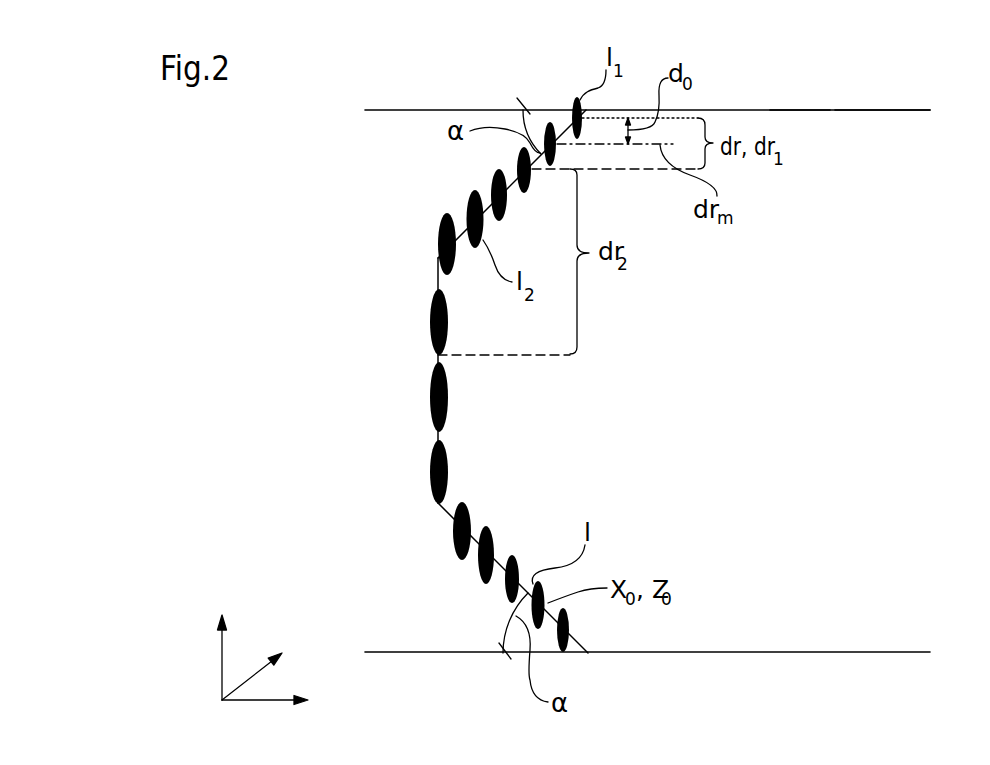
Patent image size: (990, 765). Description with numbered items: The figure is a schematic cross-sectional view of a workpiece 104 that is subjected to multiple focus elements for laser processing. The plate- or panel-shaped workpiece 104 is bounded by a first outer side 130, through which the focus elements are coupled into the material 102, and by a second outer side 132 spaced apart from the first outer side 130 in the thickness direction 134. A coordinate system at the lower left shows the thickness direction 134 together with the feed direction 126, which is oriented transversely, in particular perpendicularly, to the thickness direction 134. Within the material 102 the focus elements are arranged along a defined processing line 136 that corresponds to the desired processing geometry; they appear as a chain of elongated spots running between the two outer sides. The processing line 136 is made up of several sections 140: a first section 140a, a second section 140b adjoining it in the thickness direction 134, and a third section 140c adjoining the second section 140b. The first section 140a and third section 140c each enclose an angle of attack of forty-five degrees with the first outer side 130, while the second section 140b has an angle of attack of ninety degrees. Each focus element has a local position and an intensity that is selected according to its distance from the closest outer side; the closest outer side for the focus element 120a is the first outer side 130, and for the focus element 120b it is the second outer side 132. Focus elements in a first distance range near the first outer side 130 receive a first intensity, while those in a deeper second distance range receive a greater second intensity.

The material 102 is at (793, 133).
The workpiece 104 is at (870, 109).
The focus element 120a is at (558, 148).
The focus element 120b is at (431, 472).
The feed direction 126 is at (221, 648).
The first outer side 130 is at (425, 110).
The second outer side 132 is at (681, 653).
The thickness direction 134 is at (222, 665).
The processing line 136 is at (548, 147).
The sections 140 is at (444, 381).
The first section 140a is at (466, 162).
The second section 140b is at (401, 367).
The third section 140c is at (463, 600).